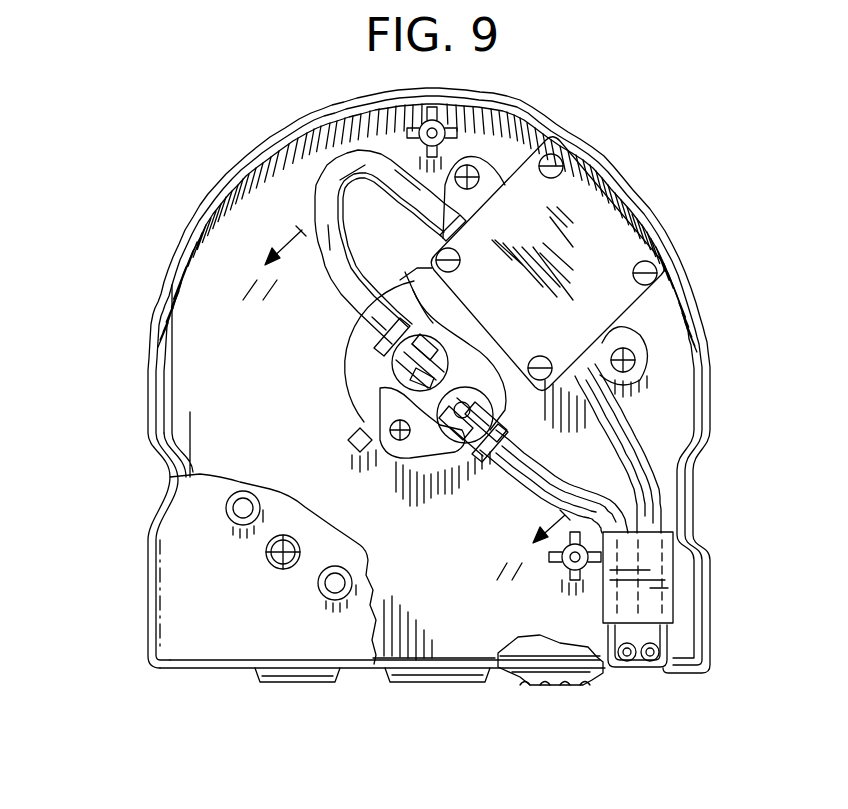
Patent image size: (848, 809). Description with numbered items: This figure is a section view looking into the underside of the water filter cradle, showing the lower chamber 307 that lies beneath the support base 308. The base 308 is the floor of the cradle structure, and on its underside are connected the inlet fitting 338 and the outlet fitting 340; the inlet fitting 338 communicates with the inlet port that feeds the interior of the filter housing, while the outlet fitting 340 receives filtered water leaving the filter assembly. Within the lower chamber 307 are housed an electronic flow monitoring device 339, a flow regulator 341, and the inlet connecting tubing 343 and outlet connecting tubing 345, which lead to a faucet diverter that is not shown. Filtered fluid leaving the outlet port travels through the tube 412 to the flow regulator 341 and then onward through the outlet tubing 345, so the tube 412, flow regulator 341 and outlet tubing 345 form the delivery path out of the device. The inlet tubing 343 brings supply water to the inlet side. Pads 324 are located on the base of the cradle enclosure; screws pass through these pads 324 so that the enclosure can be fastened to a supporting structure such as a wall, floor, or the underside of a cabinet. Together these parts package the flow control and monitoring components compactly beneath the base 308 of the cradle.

The lower chamber 307 is at (222, 434).
The base 308 is at (190, 608).
The pads 324 is at (330, 680).
The inlet fitting 338 is at (487, 417).
The electronic flow monitoring device 339 is at (353, 380).
The outlet fitting 340 is at (385, 352).
The flow regulator 341 is at (600, 240).
The inlet connecting tubing 343 is at (510, 503).
The outlet connecting tubing 345 is at (660, 480).
The tube 412 is at (337, 177).